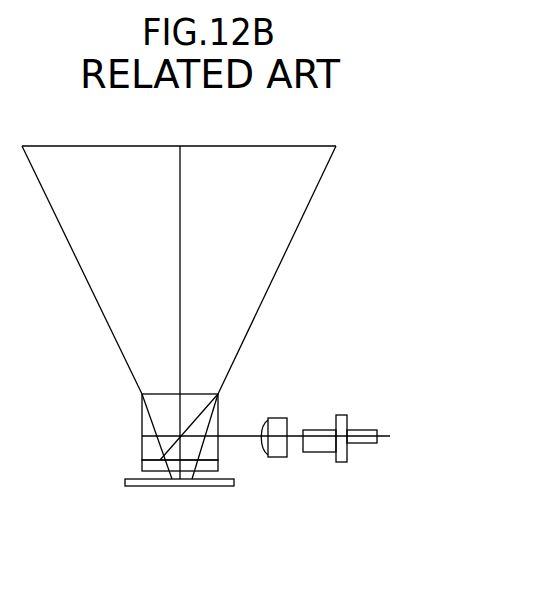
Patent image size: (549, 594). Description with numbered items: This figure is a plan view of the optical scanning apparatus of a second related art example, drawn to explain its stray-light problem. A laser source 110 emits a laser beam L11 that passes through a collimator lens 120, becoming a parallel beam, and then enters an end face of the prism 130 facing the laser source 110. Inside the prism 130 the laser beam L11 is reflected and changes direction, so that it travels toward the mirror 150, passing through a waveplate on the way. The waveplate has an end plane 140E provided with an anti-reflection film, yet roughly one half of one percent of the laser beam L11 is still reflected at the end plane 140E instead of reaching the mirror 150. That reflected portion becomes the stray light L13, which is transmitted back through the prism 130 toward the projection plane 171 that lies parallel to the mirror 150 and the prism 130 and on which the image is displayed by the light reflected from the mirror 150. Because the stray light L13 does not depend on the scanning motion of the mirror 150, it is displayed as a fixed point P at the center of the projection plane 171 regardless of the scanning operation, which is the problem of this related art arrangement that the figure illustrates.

The projection plane 171 is at (250, 145).
The stray light L13 is at (180, 212).
The point P is at (179, 129).
The prism 130 is at (142, 420).
The end plane 140E is at (142, 463).
The mirror 150 is at (126, 482).
The laser beam L11 is at (182, 440).
The collimator lens 120 is at (283, 418).
The laser source 110 is at (345, 415).